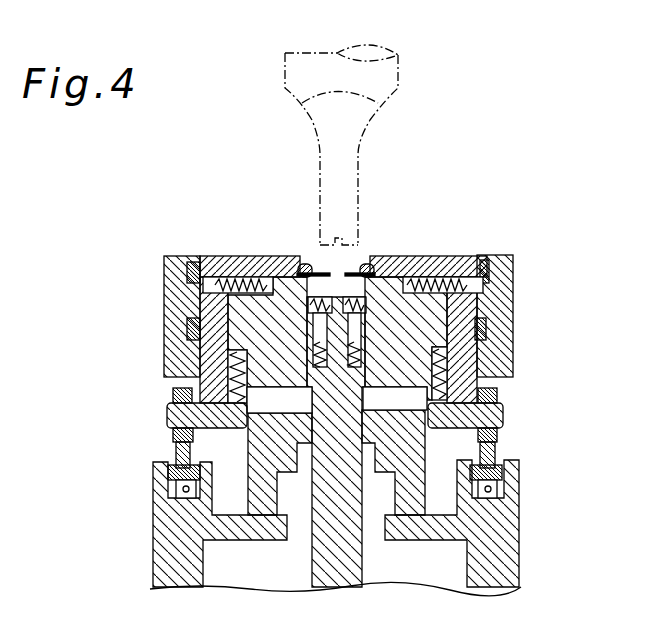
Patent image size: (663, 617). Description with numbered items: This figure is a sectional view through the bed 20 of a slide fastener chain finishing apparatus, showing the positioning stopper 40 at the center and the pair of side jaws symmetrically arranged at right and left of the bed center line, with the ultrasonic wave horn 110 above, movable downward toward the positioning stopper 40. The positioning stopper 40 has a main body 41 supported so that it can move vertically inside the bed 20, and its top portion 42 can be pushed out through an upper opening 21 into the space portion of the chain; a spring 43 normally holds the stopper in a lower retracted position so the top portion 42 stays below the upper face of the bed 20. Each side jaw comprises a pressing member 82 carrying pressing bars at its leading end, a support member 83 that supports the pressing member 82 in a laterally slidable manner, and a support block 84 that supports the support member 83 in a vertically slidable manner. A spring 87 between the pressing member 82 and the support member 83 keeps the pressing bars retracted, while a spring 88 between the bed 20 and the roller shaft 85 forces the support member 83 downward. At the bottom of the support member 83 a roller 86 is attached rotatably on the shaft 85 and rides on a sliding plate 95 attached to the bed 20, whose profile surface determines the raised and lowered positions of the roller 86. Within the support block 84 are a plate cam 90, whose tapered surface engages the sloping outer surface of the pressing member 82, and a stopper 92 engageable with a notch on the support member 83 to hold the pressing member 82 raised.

The ultrasonic wave horn 110 is at (358, 154).
The upper opening 21 is at (340, 294).
The spring 43 is at (291, 262).
The top portion 42 is at (360, 273).
The pressing member 82 is at (405, 264).
The spring 87 is at (485, 262).
The plate cam 90 is at (496, 258).
The support block 84 is at (500, 285).
The support member 83 is at (467, 309).
The stopper 92 is at (487, 337).
The shaft 85 is at (503, 420).
The roller 86 is at (496, 430).
The sliding plate 95 is at (501, 470).
The spring 88 is at (432, 389).
The main body 41 is at (352, 445).
The bed 20 is at (286, 335).
The positioning stopper 40 is at (307, 554).